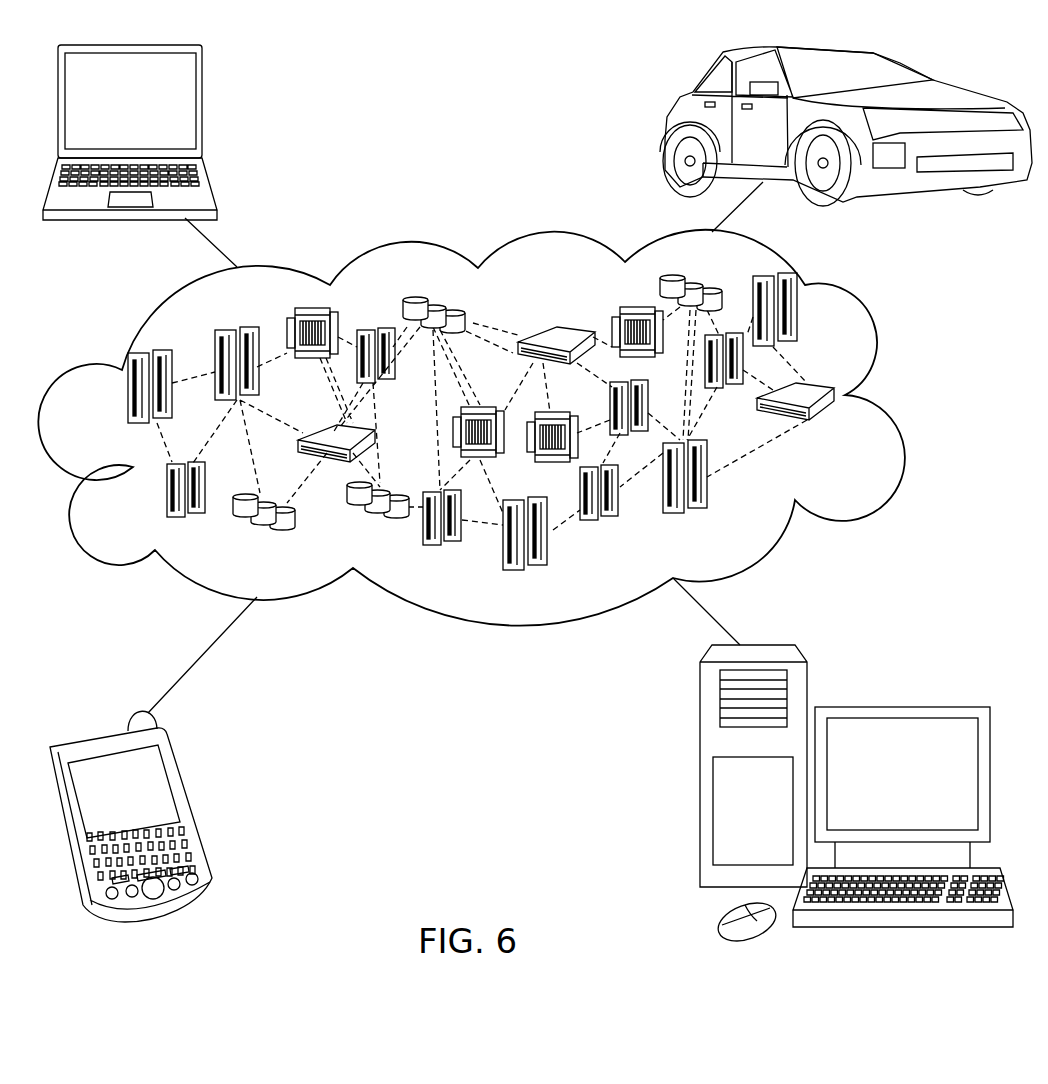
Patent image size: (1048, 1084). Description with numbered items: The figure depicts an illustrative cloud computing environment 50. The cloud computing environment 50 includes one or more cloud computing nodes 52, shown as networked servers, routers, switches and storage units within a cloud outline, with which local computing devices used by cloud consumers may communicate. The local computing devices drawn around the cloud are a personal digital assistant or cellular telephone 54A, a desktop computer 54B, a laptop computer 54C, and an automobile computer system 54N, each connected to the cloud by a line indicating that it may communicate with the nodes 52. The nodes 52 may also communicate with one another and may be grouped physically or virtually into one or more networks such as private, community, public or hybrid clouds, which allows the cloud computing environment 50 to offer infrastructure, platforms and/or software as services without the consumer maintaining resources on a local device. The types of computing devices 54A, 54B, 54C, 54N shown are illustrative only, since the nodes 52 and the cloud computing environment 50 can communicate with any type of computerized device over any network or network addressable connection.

The cloud computing environment 50 is at (900, 402).
The cloud computing nodes 52 is at (837, 433).
The personal digital assistant (PDA) or cellular telephone 54A is at (190, 806).
The desktop computer 54B is at (900, 706).
The laptop computer 54C is at (203, 110).
The automobile computer system 54N is at (668, 128).